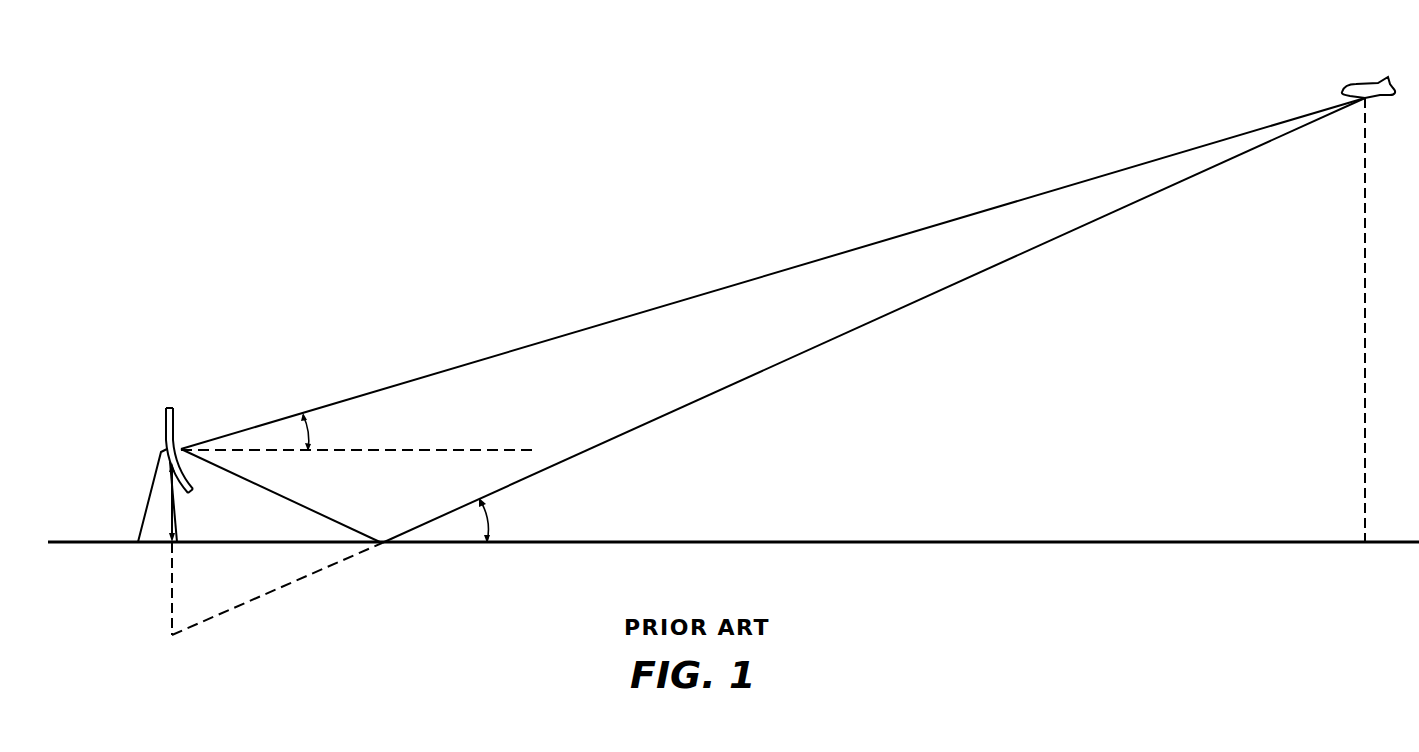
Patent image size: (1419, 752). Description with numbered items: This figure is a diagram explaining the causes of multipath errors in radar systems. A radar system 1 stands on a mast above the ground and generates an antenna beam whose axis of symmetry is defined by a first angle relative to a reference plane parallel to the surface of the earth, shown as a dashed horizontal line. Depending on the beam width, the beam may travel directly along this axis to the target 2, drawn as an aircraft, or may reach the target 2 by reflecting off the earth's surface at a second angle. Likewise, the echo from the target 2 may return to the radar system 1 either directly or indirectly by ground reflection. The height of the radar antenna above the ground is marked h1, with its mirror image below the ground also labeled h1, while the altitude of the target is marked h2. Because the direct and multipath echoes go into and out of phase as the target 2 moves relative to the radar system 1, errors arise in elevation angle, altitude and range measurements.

The radar system 1 is at (158, 455).
The target 2 is at (1392, 90).
The antenna height above ground h1 is at (176, 531).
The target altitude above ground h2 is at (1367, 331).